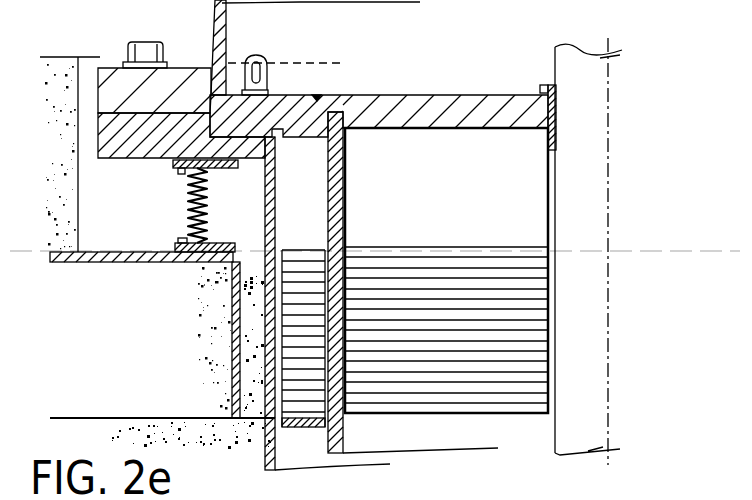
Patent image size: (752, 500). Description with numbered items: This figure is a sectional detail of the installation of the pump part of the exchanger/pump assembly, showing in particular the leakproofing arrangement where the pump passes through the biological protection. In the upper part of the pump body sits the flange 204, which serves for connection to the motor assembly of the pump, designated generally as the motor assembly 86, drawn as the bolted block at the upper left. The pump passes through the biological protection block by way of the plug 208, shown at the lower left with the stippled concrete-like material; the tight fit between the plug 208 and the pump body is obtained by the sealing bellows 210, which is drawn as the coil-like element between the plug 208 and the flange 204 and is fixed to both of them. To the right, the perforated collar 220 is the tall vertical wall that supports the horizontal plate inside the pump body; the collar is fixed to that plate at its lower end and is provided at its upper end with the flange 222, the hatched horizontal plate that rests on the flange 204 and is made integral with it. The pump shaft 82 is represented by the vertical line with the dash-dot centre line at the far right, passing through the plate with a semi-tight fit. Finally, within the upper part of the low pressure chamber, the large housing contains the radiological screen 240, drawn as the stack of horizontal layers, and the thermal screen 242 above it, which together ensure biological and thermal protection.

The shaft 82 is at (556, 441).
The motor assembly 86 is at (184, 68).
The flange 204 is at (158, 159).
The plug 208 is at (150, 337).
The sealing bellows 210 is at (178, 211).
The perforated collar 220 is at (340, 443).
The flange 222 is at (291, 95).
The radiological screen 240 is at (453, 258).
The thermal screen 242 is at (458, 170).